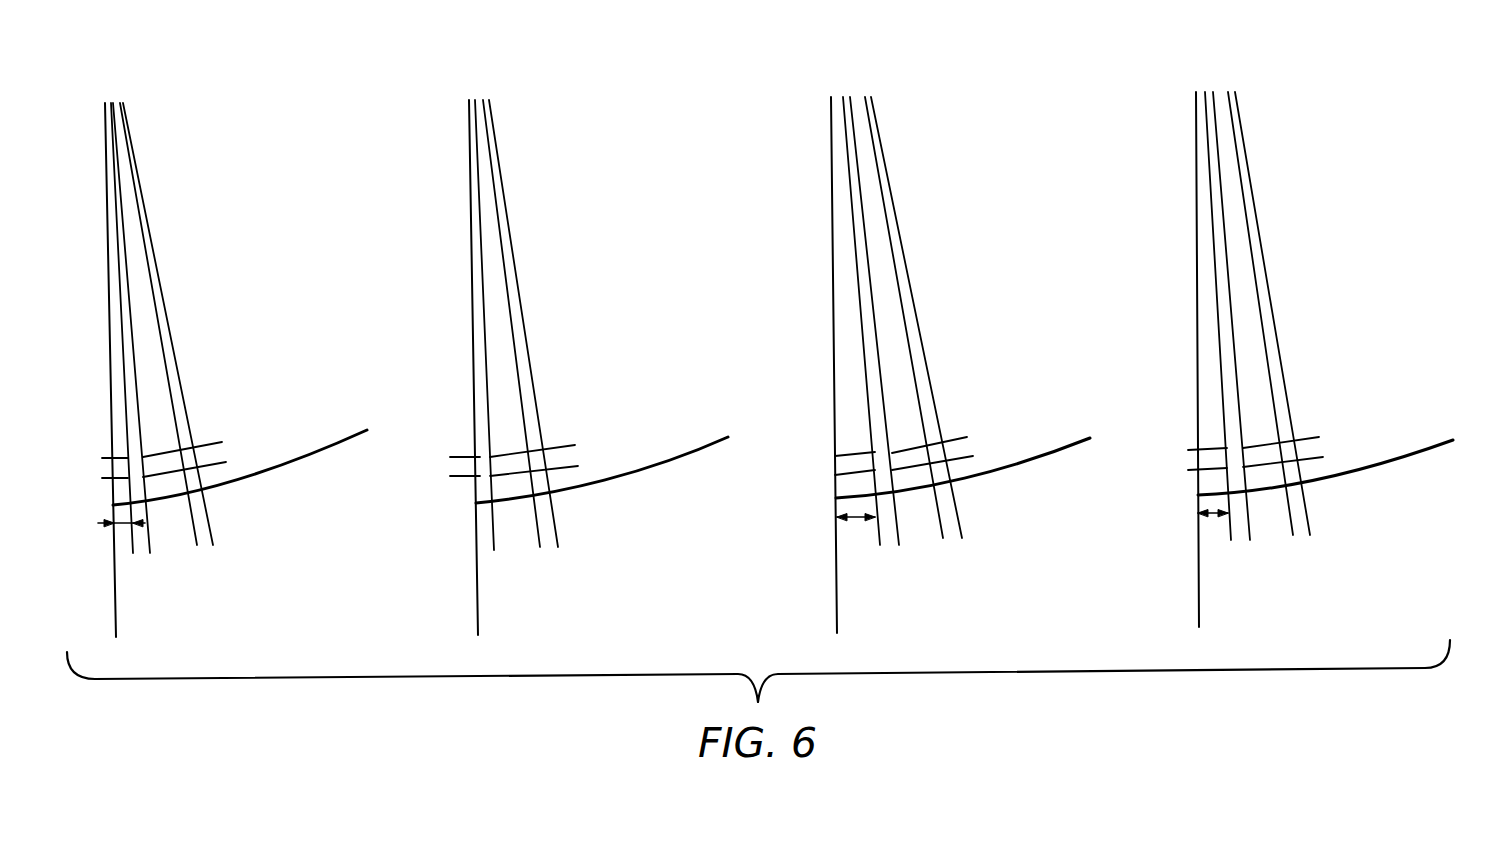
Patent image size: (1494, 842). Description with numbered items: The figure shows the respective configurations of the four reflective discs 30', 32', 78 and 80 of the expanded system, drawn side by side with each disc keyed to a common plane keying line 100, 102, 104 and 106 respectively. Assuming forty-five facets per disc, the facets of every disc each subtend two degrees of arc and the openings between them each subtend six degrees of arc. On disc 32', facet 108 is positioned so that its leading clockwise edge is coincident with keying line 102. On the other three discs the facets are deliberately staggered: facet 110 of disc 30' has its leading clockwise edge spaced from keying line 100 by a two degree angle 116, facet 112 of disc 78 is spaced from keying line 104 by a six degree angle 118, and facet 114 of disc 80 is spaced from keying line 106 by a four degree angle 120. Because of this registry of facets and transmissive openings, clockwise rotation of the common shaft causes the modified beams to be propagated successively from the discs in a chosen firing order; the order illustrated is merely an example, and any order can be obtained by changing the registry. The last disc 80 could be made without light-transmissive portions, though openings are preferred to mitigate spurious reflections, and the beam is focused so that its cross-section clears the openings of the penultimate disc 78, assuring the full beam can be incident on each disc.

The disc 30' is at (207, 370).
The disc 32' is at (562, 367).
The disc 78 is at (995, 231).
The disc 80 is at (1355, 227).
The keying line 100 is at (115, 605).
The keying line 102 is at (475, 592).
The keying line 104 is at (836, 607).
The keying line 106 is at (1198, 597).
The facet 108 is at (482, 460).
The facet 110 is at (133, 460).
The facet 112 is at (880, 458).
The facet 114 is at (1233, 453).
The angle 116 is at (120, 523).
The angle 118 is at (857, 522).
The angle 120 is at (1213, 518).